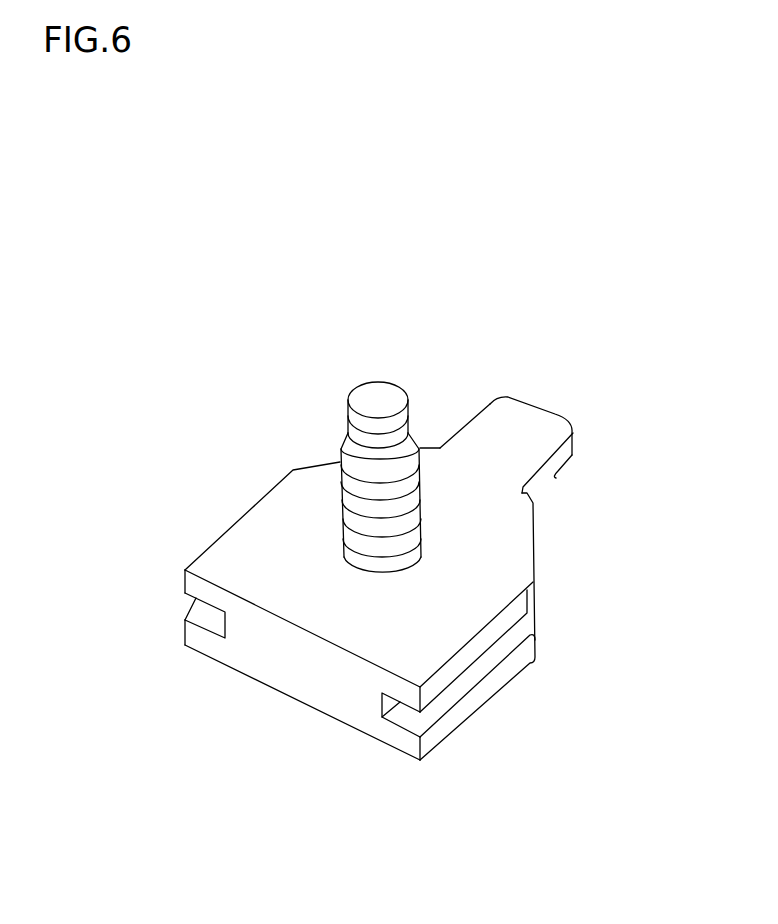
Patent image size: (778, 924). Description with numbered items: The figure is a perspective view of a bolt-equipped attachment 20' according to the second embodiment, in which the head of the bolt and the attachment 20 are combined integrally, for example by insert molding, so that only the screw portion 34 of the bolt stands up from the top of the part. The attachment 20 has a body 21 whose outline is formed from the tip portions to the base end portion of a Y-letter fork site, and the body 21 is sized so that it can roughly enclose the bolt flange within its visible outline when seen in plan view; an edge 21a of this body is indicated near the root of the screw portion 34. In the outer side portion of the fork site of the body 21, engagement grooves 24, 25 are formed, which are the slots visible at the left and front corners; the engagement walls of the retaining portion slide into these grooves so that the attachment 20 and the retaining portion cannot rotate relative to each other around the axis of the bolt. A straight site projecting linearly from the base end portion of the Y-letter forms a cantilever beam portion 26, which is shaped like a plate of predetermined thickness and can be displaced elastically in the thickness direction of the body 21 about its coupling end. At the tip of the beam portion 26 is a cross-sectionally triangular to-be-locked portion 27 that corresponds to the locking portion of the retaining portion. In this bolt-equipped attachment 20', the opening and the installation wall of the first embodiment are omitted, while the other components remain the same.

The bolt-equipped attachment 20' is at (363, 478).
The attachment 20 is at (524, 626).
The body 21 is at (268, 507).
The edge of plate portion 21a is at (437, 446).
The engagement groove 24 is at (202, 610).
The engagement groove 25 is at (447, 712).
The cantilever beam portion 26 is at (532, 432).
The to-be-locked portion 27 is at (573, 478).
The screw portion 34 is at (417, 433).